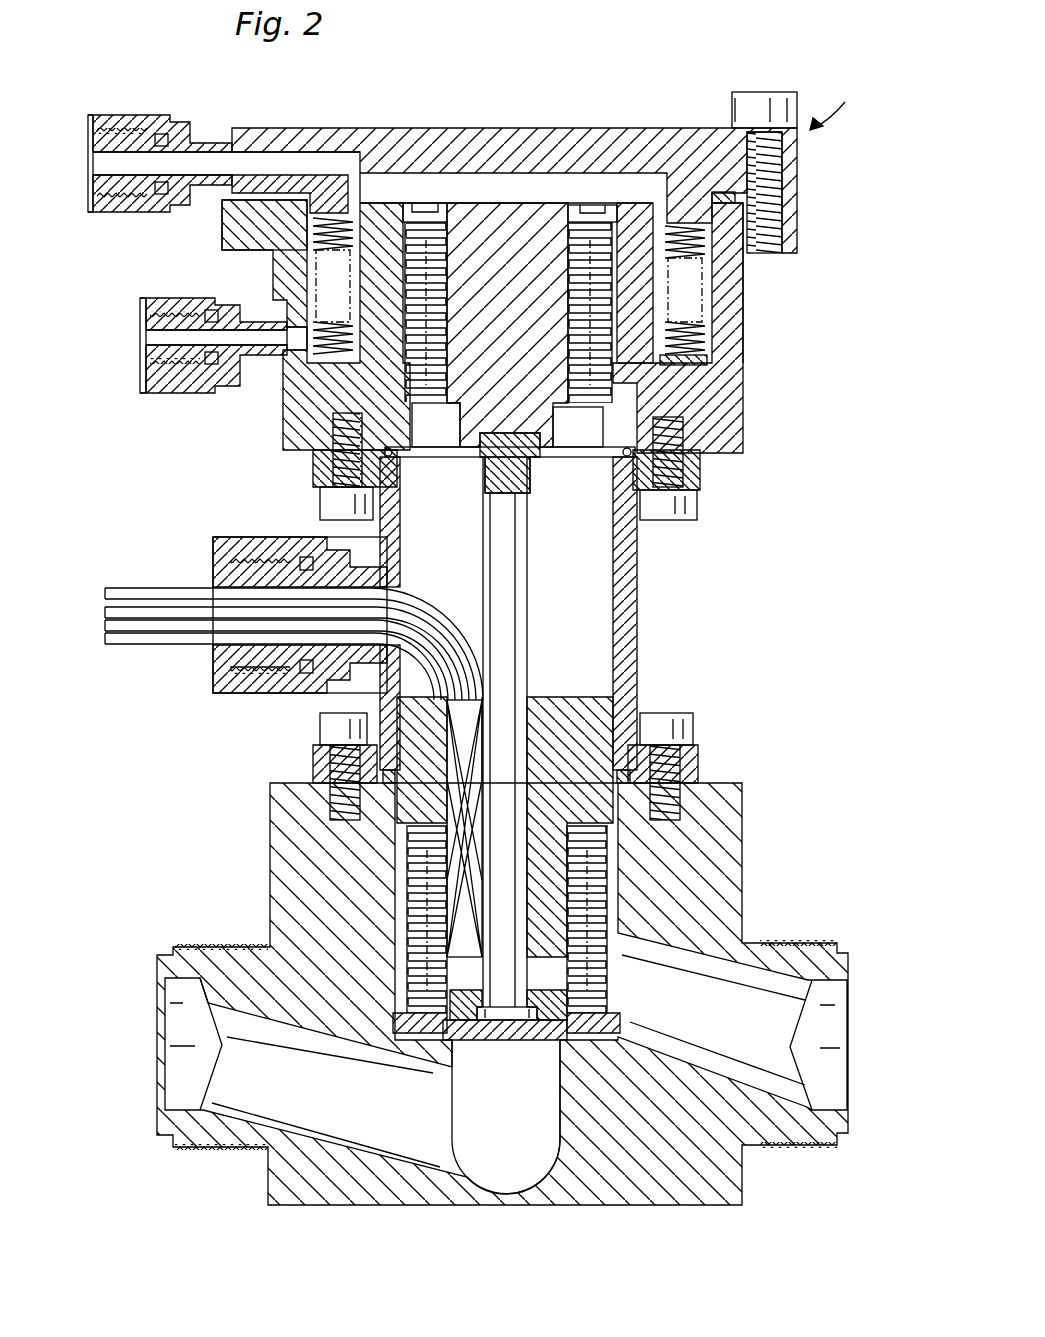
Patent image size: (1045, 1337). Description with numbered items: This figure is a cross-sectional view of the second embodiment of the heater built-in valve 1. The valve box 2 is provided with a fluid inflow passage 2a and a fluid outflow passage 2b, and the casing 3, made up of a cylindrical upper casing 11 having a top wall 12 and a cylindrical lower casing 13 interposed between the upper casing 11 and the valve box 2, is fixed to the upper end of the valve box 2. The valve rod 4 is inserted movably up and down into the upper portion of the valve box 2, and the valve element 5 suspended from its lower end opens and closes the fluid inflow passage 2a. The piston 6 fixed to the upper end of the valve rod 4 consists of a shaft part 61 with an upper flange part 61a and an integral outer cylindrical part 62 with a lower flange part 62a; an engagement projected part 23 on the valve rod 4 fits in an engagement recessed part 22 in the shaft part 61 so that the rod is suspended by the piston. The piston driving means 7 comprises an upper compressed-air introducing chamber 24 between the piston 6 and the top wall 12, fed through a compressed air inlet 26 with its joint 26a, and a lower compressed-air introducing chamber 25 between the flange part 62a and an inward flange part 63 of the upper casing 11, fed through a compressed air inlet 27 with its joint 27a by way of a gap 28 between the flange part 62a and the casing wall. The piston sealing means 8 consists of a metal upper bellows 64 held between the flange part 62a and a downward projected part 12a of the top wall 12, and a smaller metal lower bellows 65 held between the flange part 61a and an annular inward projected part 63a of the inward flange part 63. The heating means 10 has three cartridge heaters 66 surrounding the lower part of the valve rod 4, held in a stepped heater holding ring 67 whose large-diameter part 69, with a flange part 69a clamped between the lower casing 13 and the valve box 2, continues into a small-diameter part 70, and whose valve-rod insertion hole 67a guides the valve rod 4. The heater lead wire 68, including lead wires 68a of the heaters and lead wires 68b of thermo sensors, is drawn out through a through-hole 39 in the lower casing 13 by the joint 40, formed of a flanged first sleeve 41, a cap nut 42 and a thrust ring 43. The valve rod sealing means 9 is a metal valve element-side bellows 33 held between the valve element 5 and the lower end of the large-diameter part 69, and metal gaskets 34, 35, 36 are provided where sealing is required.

The heater built-in valve 1 is at (833, 100).
The valve box 2 is at (743, 822).
The fluid inflow passage 2a is at (238, 1124).
The fluid outflow passage 2b is at (762, 1074).
The casing 3 is at (754, 397).
The valve rod 4 is at (528, 607).
The valve element 5 is at (510, 1030).
The piston 6 is at (557, 425).
The piston driving means 7 is at (376, 186).
The piston sealing means 8 is at (716, 332).
The valve rod sealing means 9 is at (606, 925).
The heating means 10 is at (433, 913).
The upper casing 11 is at (744, 283).
The top wall 12 is at (612, 128).
The downward projected part 12a is at (328, 218).
The lower casing 13 is at (638, 565).
The engagement recessed part 22 is at (522, 470).
The engagement projected part 23 is at (518, 474).
The upper compressed-air introducing chamber 24 is at (416, 185).
The lower compressed-air introducing chamber 25 is at (345, 392).
The compressed air inlet 26 is at (246, 150).
The joint 26a is at (140, 117).
The compressed air inlet 27 is at (268, 330).
The joint 27a is at (167, 300).
The gap 28 is at (295, 355).
The valve element-side bellows 33 is at (443, 880).
The metal gasket 34 is at (642, 458).
The metal gasket 35 is at (650, 762).
The metal gasket 36 is at (383, 813).
The through-hole 39 is at (268, 584).
The joint 40 is at (232, 537).
The first sleeve 41 is at (338, 680).
The cap nut 42 is at (227, 683).
The thrust ring 43 is at (257, 695).
The shaft part 61 is at (490, 225).
The flange part 61a is at (585, 215).
The outer cylindrical part 62 is at (635, 225).
The flange part 62a is at (688, 357).
The inward flange part 63 is at (388, 473).
The annular inward projected part 63a is at (425, 390).
The upper bellows 64 is at (312, 240).
The lower bellows 65 is at (430, 235).
The cartridge heater 66 is at (445, 890).
The heater holding ring 67 is at (600, 727).
The valve-rod insertion hole 67a is at (510, 705).
The heater lead wire 68 is at (127, 592).
The lead wires 68a is at (160, 636).
The lead wires 68b is at (122, 628).
The large-diameter part 69 is at (597, 740).
The flange part 69a is at (383, 780).
The small-diameter part 70 is at (556, 890).